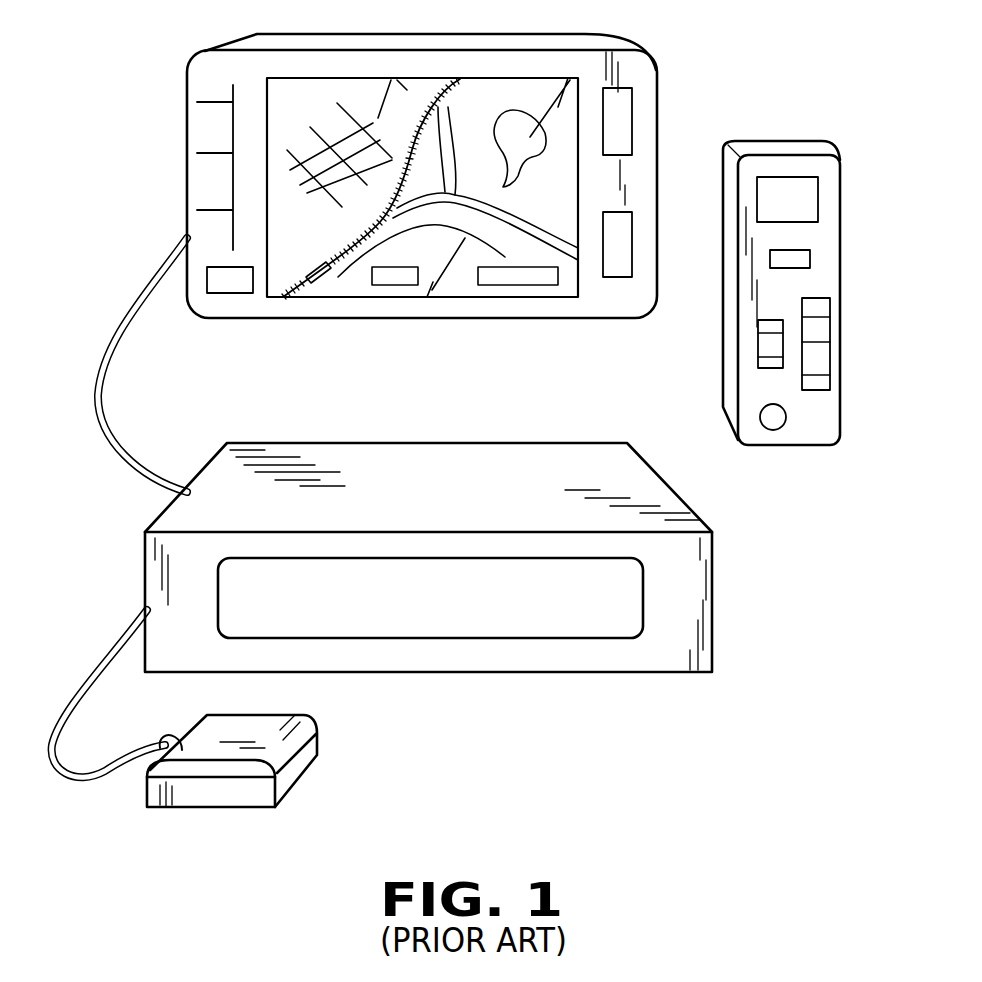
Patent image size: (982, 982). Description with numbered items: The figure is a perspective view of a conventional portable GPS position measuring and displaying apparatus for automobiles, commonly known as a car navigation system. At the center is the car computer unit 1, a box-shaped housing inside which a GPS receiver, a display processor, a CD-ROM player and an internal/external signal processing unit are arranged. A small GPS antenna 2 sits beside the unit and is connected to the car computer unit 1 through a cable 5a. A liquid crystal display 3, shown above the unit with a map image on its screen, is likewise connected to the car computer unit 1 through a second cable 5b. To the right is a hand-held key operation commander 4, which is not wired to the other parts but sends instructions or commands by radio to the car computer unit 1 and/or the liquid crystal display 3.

The car computer unit 1 is at (540, 664).
The GPS antenna 2 is at (313, 743).
The liquid crystal display 3 is at (655, 118).
The key operation commander 4 is at (840, 250).
The cable 5a is at (98, 655).
The cable 5b is at (125, 343).